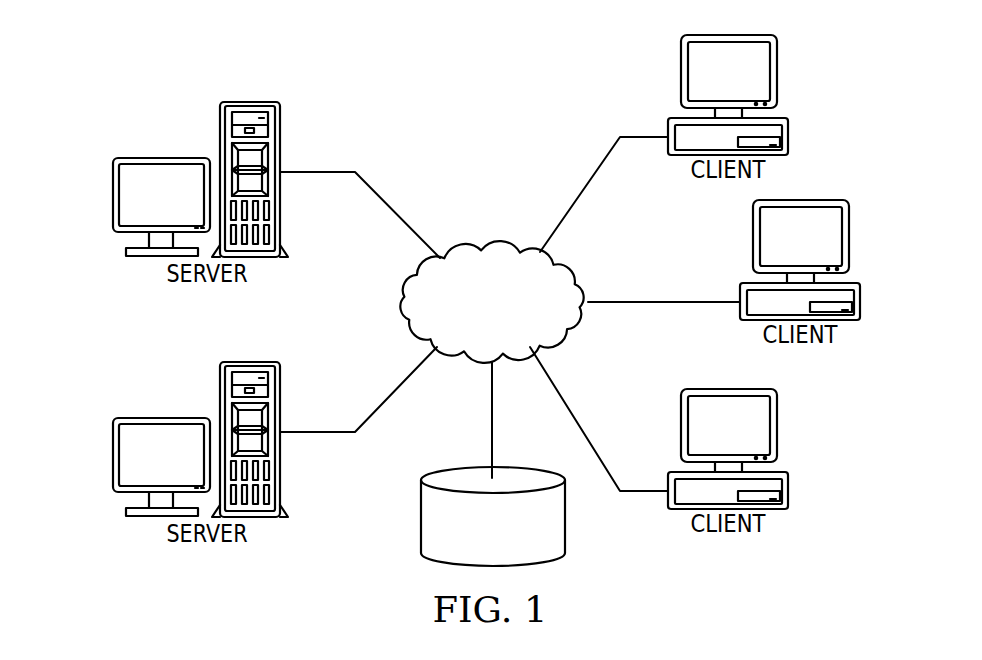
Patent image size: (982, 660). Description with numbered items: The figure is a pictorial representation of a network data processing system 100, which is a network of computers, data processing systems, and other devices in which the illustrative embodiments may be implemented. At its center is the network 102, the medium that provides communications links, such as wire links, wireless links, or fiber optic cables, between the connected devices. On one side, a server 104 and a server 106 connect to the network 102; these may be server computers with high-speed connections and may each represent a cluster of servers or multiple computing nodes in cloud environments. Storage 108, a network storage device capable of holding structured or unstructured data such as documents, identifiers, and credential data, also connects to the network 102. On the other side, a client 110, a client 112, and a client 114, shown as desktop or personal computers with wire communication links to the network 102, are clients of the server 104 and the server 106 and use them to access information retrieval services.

The network data processing system 100 is at (354, 79).
The network 102 is at (458, 249).
The server 104 is at (113, 195).
The server 106 is at (113, 456).
The storage 108 is at (421, 515).
The client 110 is at (788, 130).
The client 112 is at (860, 308).
The client 114 is at (788, 500).